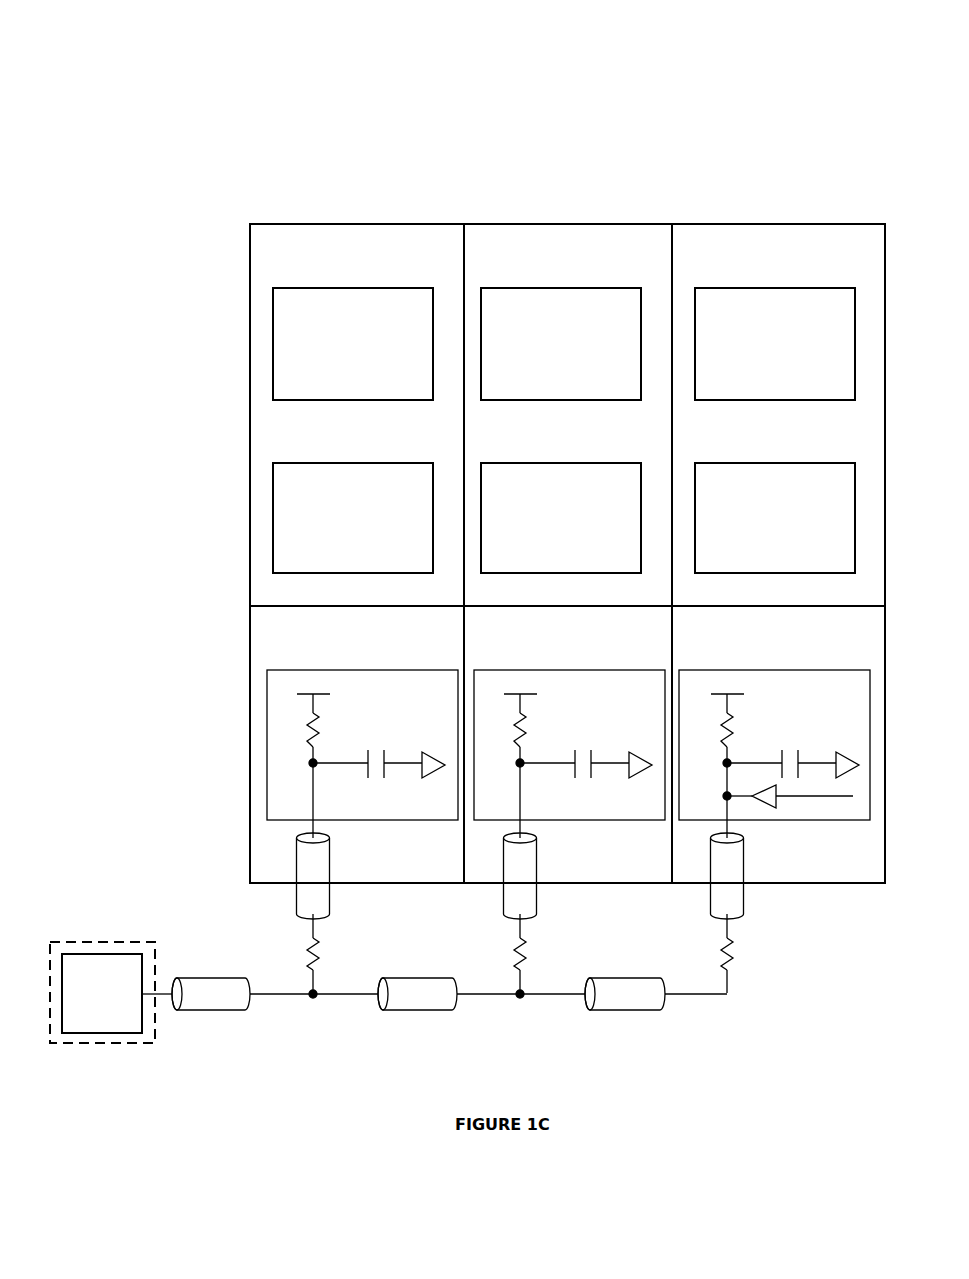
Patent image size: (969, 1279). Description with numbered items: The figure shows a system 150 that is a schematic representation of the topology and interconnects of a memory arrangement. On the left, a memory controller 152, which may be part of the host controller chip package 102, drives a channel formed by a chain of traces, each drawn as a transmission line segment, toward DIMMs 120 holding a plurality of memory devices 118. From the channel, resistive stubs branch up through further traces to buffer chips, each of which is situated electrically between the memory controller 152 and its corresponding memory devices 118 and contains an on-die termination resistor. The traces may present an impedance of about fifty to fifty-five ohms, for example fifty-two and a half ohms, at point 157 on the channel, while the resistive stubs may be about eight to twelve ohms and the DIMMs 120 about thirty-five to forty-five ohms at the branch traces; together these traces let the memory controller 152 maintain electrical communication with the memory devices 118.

The system 150 is at (474, 118).
The DIMMs 120 is at (272, 259).
The memory devices 118 is at (268, 415).
The point 157 is at (316, 999).
The host controller chip package 102 is at (75, 942).
The memory controller 152 is at (108, 954).